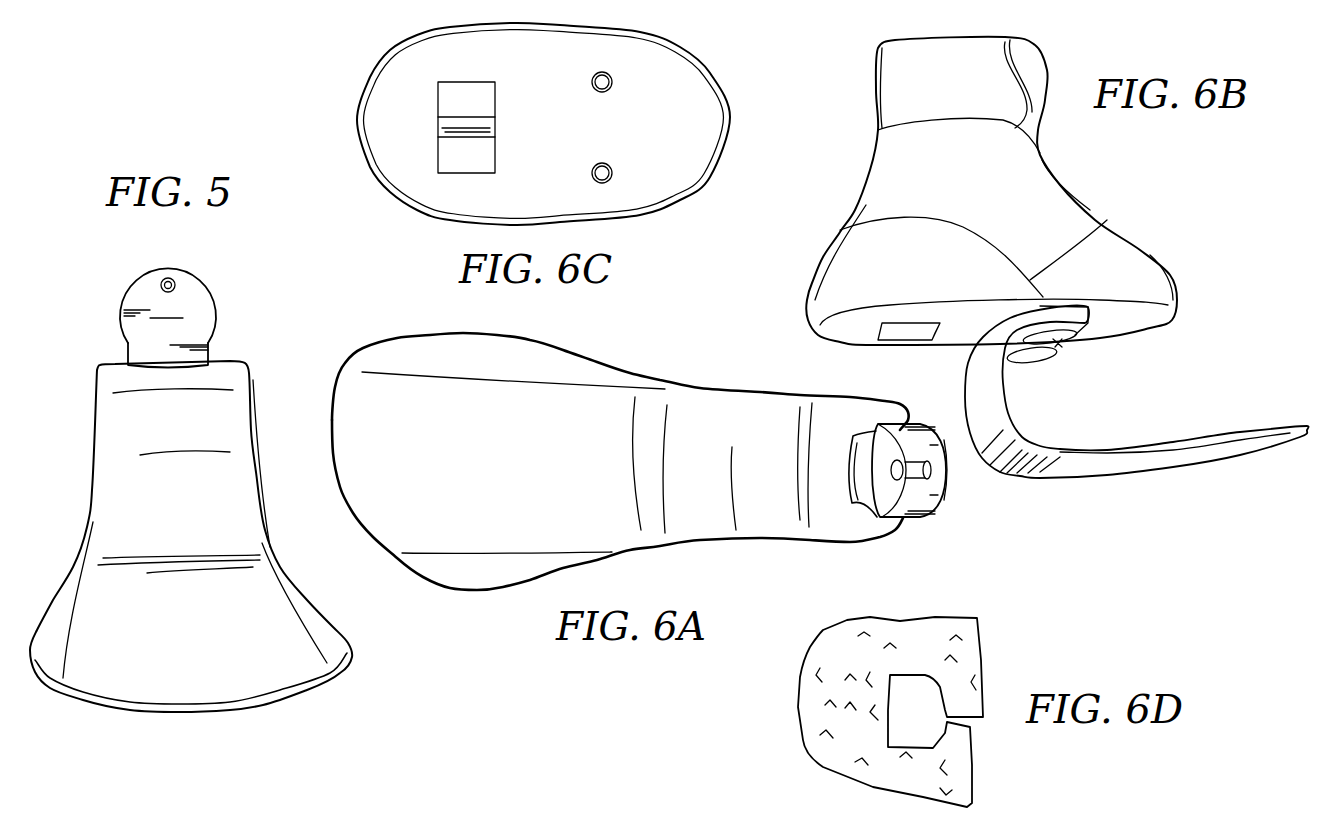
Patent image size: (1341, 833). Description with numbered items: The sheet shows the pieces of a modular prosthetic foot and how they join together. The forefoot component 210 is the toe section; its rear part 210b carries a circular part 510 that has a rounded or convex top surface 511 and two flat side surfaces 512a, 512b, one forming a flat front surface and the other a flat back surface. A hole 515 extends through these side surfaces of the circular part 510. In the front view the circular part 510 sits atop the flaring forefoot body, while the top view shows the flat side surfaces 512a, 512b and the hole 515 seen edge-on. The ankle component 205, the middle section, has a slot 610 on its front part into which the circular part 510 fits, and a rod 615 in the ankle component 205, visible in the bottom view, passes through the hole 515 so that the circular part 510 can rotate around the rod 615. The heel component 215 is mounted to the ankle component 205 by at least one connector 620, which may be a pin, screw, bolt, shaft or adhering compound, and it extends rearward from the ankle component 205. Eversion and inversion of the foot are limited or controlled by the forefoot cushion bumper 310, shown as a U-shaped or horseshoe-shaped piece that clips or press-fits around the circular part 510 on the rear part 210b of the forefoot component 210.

In FIG. 6B, the ankle component 205 is at (1038, 203).
In FIG. 5, the forefoot component 210 is at (112, 632).
In FIG. 6A, the forefoot component 210 is at (447, 420).
In FIG. 5, the rear part of the forefoot component 210b is at (118, 366).
In FIG. 6A, the rear part of the forefoot component 210b is at (862, 522).
In FIG. 6B, the heel component 215 is at (1207, 433).
In FIG. 6D, the forefoot cushion bumper 310 is at (967, 655).
In FIG. 5, the circular part 510 is at (173, 287).
In FIG. 6A, the circular part 510 is at (930, 474).
In FIG. 5, the rounded top surface 511 is at (133, 284).
In FIG. 6A, the flat side surface 512a is at (867, 488).
In FIG. 6A, the flat side surface 512b is at (950, 475).
In FIG. 5, the hole 515 is at (177, 285).
In FIG. 6A, the hole 515 is at (893, 465).
In FIG. 6C, the slot 610 is at (477, 102).
In FIG. 6B, the slot 610 is at (890, 336).
In FIG. 6C, the rod 615 is at (462, 127).
In FIG. 6B, the connector 620 is at (1067, 345).